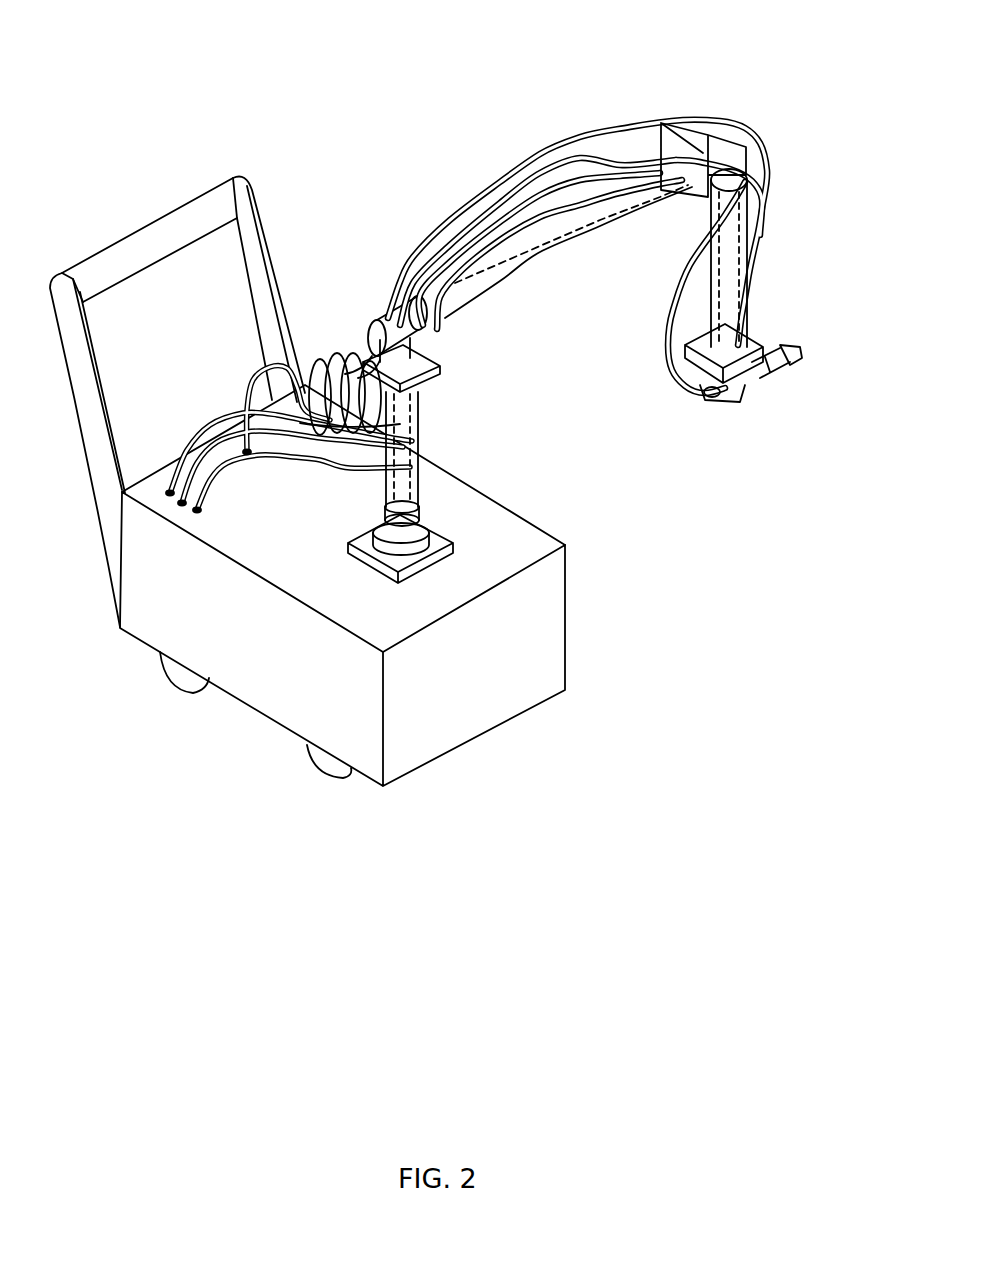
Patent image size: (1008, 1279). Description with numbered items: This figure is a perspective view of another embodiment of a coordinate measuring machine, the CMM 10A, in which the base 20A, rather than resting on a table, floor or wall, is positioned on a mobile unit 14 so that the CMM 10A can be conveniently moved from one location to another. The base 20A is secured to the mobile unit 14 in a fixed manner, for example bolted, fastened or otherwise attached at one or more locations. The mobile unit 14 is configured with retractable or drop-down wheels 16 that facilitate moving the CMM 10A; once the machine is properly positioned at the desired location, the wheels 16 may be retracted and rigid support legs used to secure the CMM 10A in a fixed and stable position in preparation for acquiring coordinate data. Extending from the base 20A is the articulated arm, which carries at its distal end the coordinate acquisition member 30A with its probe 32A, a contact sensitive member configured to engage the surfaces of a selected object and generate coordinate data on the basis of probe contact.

The CMM 10A is at (382, 141).
The mobile unit 14 is at (540, 633).
The wheels 16 is at (193, 693).
The base 20A is at (452, 538).
The coordinate acquisition member 30A is at (757, 388).
The probe 32A is at (798, 352).